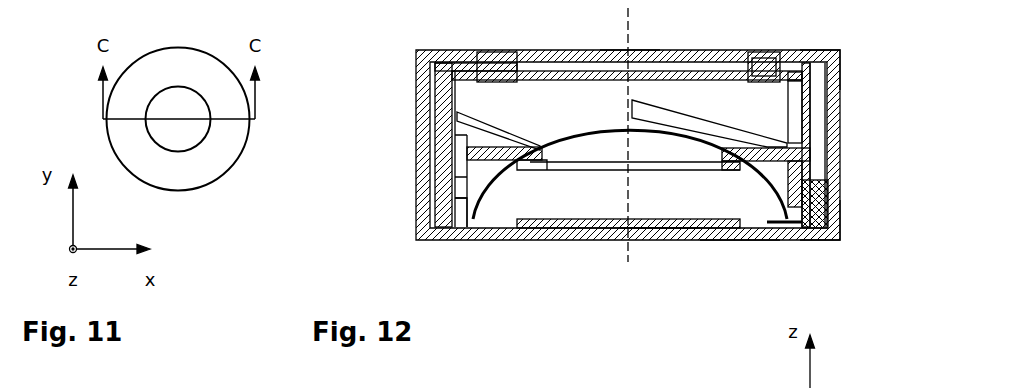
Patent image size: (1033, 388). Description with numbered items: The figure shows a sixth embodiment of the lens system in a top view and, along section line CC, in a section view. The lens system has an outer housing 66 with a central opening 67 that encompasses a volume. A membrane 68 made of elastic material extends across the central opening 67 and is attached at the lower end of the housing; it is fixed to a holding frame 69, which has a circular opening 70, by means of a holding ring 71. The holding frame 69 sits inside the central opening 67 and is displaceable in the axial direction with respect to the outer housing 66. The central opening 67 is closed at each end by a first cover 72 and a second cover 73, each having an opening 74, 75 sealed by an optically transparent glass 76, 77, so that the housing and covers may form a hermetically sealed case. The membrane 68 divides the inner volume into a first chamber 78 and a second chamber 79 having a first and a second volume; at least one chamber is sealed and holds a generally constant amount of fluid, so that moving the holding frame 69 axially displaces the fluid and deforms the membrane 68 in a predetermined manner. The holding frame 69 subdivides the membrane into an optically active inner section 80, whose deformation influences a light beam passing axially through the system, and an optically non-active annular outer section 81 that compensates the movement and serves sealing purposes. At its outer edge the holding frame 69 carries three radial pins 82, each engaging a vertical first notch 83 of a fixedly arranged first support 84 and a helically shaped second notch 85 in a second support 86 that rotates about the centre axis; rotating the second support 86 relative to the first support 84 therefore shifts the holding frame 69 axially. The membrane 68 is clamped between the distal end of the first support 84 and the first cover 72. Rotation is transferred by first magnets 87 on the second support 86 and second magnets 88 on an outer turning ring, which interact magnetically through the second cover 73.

In FIG. 11, the outer housing 66 is at (208, 156).
In FIG. 12, the outer housing 66 is at (470, 259).
In FIG. 12, the central opening 67 is at (565, 199).
In FIG. 12, the membrane 68 is at (593, 132).
In FIG. 12, the holding frame 69 is at (445, 143).
In FIG. 12, the circular opening 70 is at (542, 141).
In FIG. 12, the holding ring 71 is at (730, 162).
In FIG. 12, the first cover 72 is at (740, 233).
In FIG. 12, the second cover 73 is at (493, 53).
In FIG. 12, the opening of first cover 74 is at (568, 244).
In FIG. 12, the opening of second cover 75 is at (638, 50).
In FIG. 12, the optically transparent glass 76 is at (647, 224).
In FIG. 12, the optically transparent glass 77 is at (690, 70).
In FIG. 12, the first chamber 78 is at (527, 197).
In FIG. 12, the second chamber 79 is at (615, 97).
In FIG. 12, the inner section of membrane 80 is at (727, 60).
In FIG. 12, the outer section of membrane 81 is at (463, 178).
In FIG. 12, the radial pin 82 is at (838, 176).
In FIG. 12, the first notch 83 is at (840, 222).
In FIG. 12, the first support 84 is at (827, 240).
In FIG. 12, the second notch 85 is at (421, 84).
In FIG. 12, the second support 86 is at (797, 125).
In FIG. 12, the first magnets 87 is at (827, 54).
In FIG. 12, the second magnets 88 is at (770, 60).